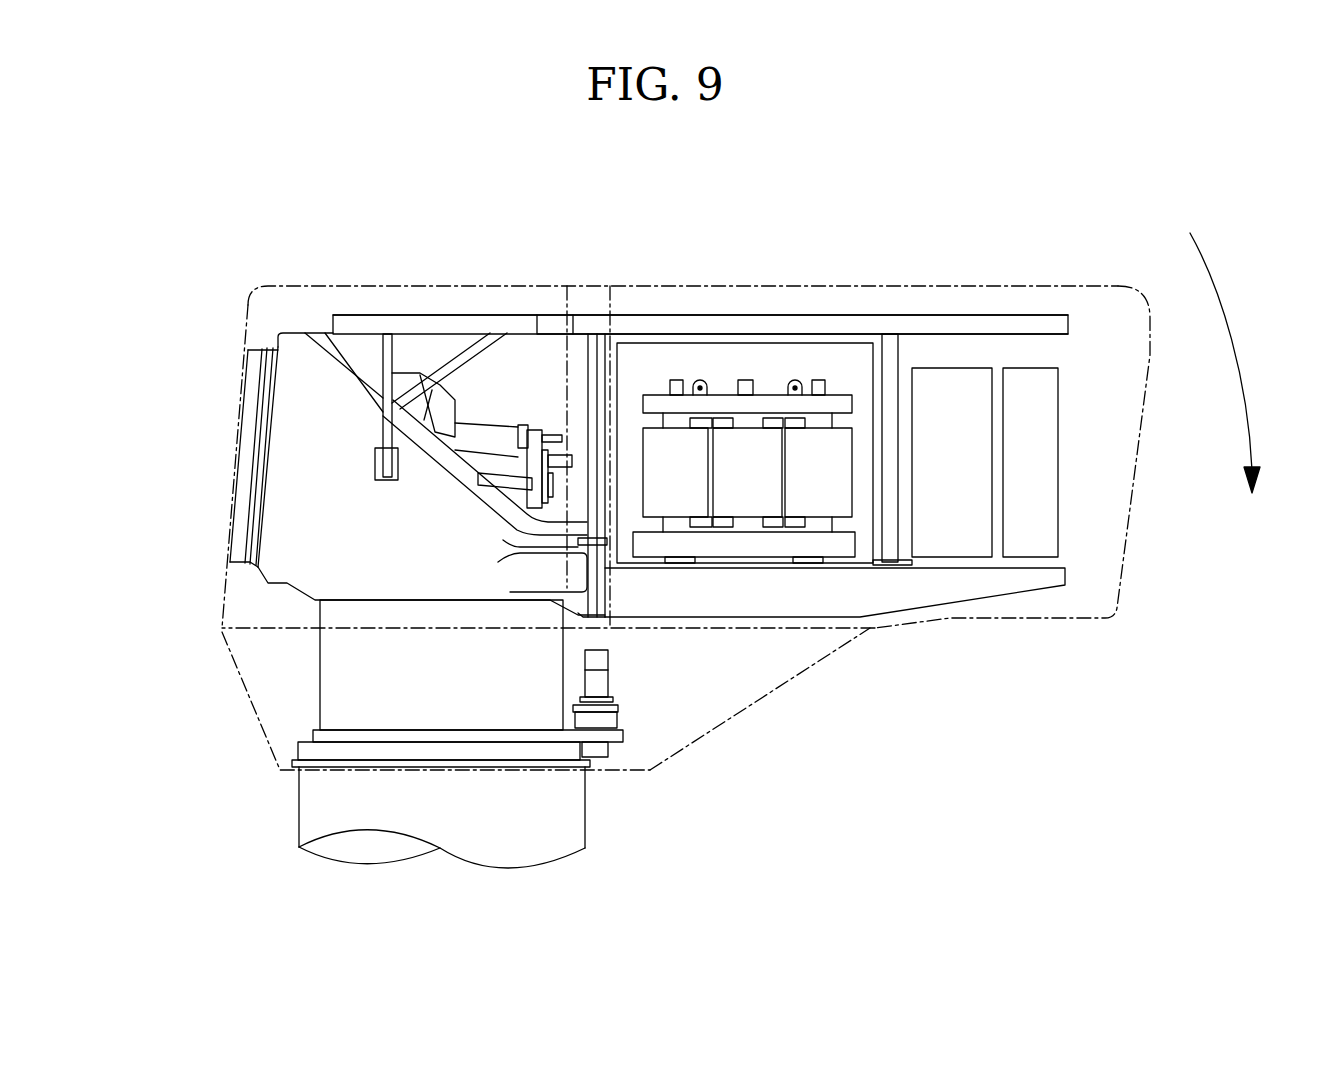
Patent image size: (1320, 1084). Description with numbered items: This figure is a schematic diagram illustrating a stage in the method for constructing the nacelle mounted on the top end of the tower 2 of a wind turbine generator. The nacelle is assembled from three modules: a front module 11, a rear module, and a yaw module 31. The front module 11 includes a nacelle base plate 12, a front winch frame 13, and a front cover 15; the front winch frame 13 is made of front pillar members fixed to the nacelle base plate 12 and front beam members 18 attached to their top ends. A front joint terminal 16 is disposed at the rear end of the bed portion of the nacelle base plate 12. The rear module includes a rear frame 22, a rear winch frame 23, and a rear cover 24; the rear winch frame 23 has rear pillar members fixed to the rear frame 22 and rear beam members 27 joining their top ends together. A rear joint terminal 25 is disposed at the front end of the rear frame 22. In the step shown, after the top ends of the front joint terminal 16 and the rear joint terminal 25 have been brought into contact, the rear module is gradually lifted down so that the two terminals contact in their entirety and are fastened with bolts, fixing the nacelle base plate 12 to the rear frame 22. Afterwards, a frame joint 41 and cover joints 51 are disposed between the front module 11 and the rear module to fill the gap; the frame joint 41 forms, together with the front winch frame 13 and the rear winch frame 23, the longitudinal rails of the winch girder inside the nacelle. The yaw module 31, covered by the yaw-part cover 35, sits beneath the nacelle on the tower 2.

The tower 2 is at (573, 818).
The front module 11 is at (248, 325).
The nacelle base plate 12 is at (285, 478).
The front winch frame 13 is at (428, 315).
The front cover 15 is at (296, 284).
The front joint terminal 16 is at (605, 604).
The front beam members 18 is at (478, 324).
The rear frame 22 is at (858, 608).
The rear winch frame 23 is at (738, 315).
The rear cover 24 is at (1090, 284).
The rear joint terminal 25 is at (600, 574).
The rear beam members 27 is at (836, 320).
The yaw module 31 is at (243, 700).
The yaw-part cover 35 is at (720, 735).
The frame joint 41 is at (550, 324).
The cover joints 51 is at (592, 284).